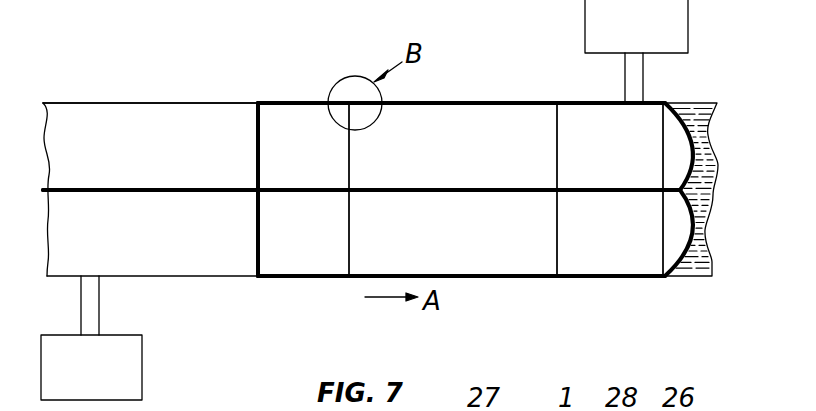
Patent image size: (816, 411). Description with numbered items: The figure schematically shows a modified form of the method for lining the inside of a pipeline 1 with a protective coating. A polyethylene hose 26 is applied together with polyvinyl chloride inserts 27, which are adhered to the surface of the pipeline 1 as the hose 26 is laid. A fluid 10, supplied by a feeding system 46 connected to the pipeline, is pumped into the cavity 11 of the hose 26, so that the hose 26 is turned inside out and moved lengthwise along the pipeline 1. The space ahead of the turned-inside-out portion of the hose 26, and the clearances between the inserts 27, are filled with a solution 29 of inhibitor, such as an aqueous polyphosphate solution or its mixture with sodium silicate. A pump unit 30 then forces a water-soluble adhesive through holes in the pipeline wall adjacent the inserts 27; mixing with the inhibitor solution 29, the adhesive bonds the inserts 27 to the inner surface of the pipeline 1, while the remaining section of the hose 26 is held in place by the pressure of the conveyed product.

The pipeline 1 is at (116, 102).
The fluid 10 is at (196, 113).
The cavity 11 is at (513, 262).
The polyethylene hose 26 is at (148, 192).
The polyvinyl chloride inserts 27 is at (297, 126).
The solution of inhibitor 29 is at (695, 268).
The pump unit 30 is at (605, 25).
The system for feeding the fluid 46 is at (120, 347).